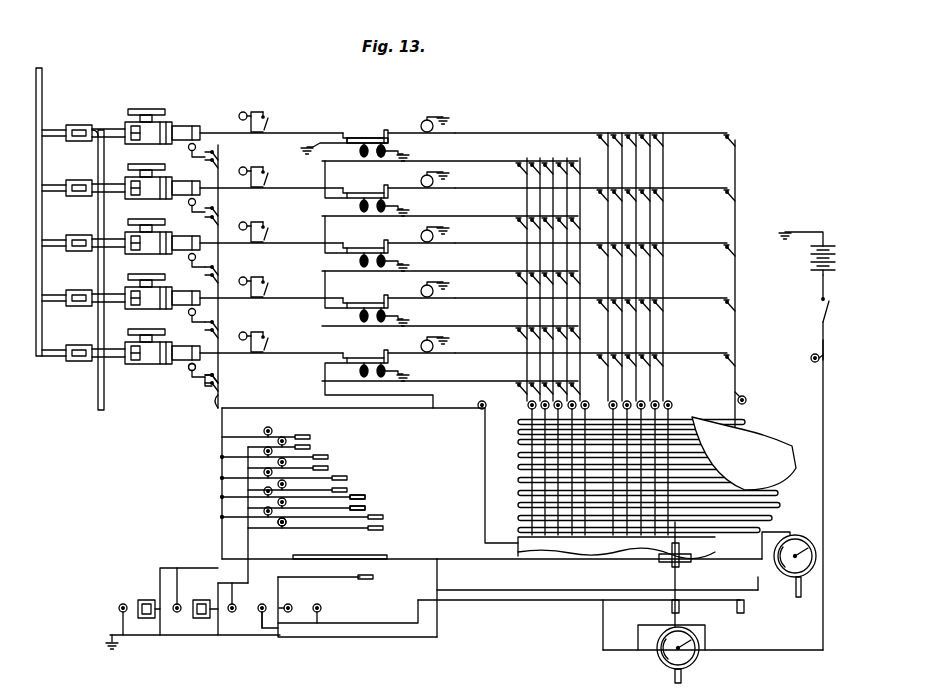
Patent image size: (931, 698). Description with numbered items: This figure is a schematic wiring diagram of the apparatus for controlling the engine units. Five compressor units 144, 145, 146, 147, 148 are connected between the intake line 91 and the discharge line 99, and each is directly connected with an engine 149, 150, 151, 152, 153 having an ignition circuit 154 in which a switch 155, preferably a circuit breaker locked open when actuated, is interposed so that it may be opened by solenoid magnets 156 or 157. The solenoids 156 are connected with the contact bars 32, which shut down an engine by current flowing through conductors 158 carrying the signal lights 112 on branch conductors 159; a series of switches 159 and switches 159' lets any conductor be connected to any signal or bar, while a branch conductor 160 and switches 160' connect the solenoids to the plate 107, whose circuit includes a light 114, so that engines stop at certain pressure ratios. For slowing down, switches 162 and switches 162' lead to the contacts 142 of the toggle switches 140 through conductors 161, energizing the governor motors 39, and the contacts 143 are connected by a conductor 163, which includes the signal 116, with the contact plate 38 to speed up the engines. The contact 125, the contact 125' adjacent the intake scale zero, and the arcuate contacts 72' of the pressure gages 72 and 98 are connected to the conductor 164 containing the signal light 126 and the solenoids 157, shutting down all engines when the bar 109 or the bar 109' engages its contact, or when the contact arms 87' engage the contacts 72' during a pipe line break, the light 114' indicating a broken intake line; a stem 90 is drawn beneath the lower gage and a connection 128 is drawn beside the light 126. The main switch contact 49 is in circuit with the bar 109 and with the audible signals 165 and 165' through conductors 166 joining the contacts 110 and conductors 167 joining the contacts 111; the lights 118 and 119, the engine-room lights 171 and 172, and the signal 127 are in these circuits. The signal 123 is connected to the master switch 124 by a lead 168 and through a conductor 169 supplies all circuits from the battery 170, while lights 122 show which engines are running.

The intake line 91 is at (43, 95).
The discharge line 99 is at (98, 400).
The compressor unit 144 is at (78, 125).
The compressor unit 145 is at (88, 172).
The compressor unit 146 is at (88, 227).
The compressor unit 147 is at (88, 282).
The compressor unit 148 is at (88, 337).
The engine 149 is at (196, 143).
The engine 150 is at (196, 198).
The engine 151 is at (196, 253).
The engine 152 is at (196, 308).
The engine 153 is at (196, 363).
The motor 39 is at (190, 370).
The signal light 122 is at (241, 116).
The ignition circuit 154 is at (296, 128).
The switch 155 is at (362, 137).
The solenoid magnet 156 is at (389, 143).
The solenoid magnet 157 is at (343, 140).
The conductor 158 is at (552, 128).
The switch 159 is at (641, 267).
The switch 159' is at (656, 253).
The branch conductor 160 is at (750, 289).
The switch 160' is at (754, 200).
The conductor 161 is at (502, 161).
The relay contacts 162 is at (530, 279).
The switch 162' is at (530, 333).
The switch contact 143 is at (210, 374).
The toggle switch 140 is at (204, 386).
The switch contact 142 is at (215, 404).
The conductor 163 is at (407, 411).
The signal light 116 is at (477, 403).
The signal light 112 is at (670, 400).
The signal light 114 is at (754, 390).
The contact bar 32 is at (697, 418).
The plate 107 is at (768, 442).
The contact plate 38 is at (515, 540).
The main switch contact 49 is at (665, 565).
The contact bar 109' is at (699, 610).
The conductor 169 is at (718, 563).
The contact 125' is at (750, 619).
The contact arm 87' is at (728, 593).
The arcuate contact 72' is at (700, 623).
The pressure gage 98 is at (801, 600).
The gauge stem 90 is at (674, 681).
The pressure gage 72 is at (655, 648).
The battery 170 is at (810, 264).
The master switch 124 is at (820, 320).
The lead 168 is at (821, 350).
The signal light 123 is at (812, 364).
The conductor 166 is at (221, 546).
The conductor 167 is at (247, 562).
The signal light 171 is at (263, 431).
The contact 110 is at (357, 499).
The contact 111 is at (366, 509).
The signal light 172 is at (284, 527).
The bar 109 is at (329, 547).
The contact 125 is at (347, 573).
The conductor 164 is at (358, 633).
The signal light 114' is at (335, 609).
The signal light 126 is at (268, 596).
The conductor 128 is at (258, 615).
The signal light 119 is at (232, 613).
The audible signal 165' is at (199, 621).
The signal light 118 is at (179, 603).
The audible signal 165 is at (195, 608).
The signal 127 is at (114, 620).